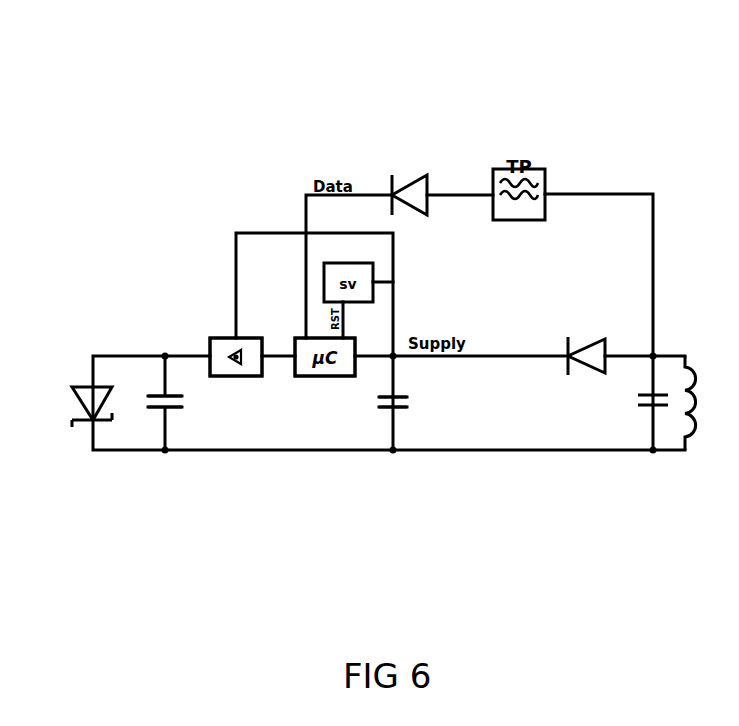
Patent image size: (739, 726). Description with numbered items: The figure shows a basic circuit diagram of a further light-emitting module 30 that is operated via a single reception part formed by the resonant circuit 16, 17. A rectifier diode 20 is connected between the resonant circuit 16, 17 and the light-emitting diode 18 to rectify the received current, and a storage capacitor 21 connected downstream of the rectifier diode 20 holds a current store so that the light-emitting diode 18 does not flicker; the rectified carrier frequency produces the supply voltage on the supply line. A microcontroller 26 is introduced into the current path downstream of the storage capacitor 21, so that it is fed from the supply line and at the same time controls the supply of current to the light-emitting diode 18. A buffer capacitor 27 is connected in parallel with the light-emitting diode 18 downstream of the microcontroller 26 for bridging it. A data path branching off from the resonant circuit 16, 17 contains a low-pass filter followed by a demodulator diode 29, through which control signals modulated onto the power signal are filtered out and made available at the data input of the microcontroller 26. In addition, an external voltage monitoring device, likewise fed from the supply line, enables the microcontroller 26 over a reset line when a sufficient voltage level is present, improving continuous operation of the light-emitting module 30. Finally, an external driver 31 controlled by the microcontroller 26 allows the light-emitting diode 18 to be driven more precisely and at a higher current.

The resonant circuit 16 is at (630, 400).
The resonant circuit 17 is at (697, 395).
The light-emitting diode 18 is at (75, 388).
The rectifier diode 20 is at (595, 340).
The storage capacitor 21 is at (410, 400).
The microcontroller 26 is at (307, 378).
The buffer capacitor 27 is at (185, 400).
The demodulator diode 29 is at (418, 175).
The light-emitting module 30 is at (632, 124).
The external driver 31 is at (210, 338).